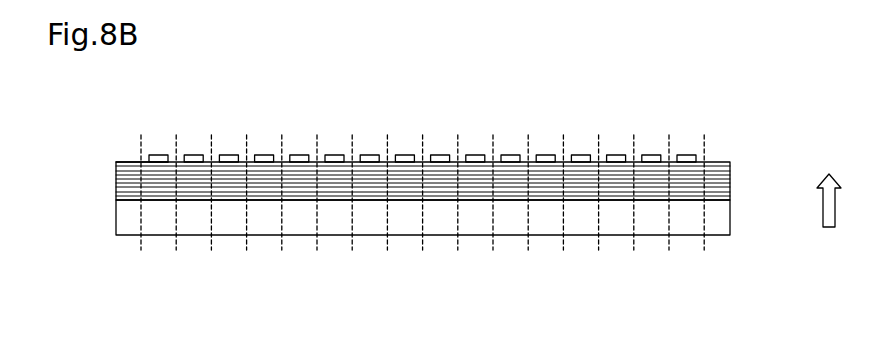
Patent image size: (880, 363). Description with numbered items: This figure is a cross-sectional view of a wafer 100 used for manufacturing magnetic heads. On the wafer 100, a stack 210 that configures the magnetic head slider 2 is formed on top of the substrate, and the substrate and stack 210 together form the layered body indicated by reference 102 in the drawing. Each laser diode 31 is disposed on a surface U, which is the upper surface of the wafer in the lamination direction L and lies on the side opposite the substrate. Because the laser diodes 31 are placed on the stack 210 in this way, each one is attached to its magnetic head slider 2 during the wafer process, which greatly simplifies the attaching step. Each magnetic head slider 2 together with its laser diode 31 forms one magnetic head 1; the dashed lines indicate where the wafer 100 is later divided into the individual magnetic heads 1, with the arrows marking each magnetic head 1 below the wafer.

The wafer 100 is at (609, 106).
The display panel 102 is at (100, 162).
The stack 210 is at (738, 163).
The magnetic head slider 2 is at (738, 201).
The laser diode 31 is at (196, 155).
The surface U is at (126, 162).
The magnetic head 1 is at (163, 251).
The lamination direction L is at (829, 187).